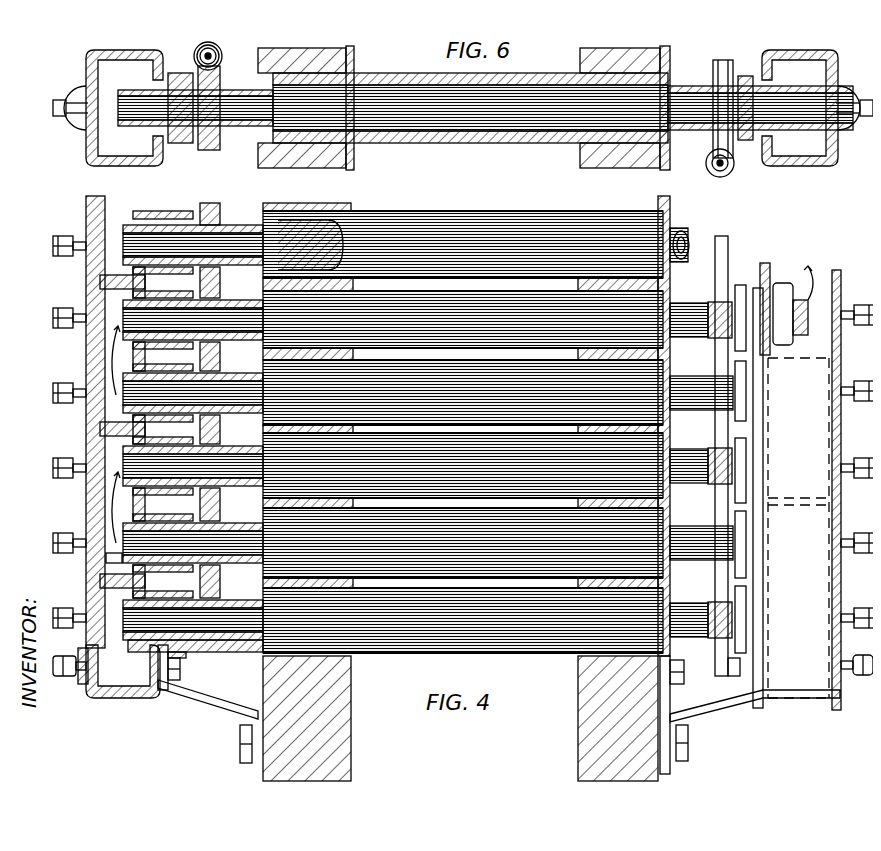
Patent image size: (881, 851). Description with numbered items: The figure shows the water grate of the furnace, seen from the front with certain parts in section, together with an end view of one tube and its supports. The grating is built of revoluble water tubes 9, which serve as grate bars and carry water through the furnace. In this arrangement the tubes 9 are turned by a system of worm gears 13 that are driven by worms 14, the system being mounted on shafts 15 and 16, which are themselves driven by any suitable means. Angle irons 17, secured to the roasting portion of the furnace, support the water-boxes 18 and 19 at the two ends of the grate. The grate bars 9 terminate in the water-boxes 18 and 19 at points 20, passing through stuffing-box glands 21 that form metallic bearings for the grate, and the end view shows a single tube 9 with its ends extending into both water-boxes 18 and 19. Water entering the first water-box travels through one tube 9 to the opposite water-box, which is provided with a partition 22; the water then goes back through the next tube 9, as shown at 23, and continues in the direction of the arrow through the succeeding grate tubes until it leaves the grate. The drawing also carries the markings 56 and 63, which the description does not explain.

In FIG. 6, the water tubes 9 is at (485, 108).
In FIG. 4, the water tubes 9 is at (428, 432).
In FIG. 6, the worm gears 13 is at (212, 75).
In FIG. 4, the worm gears 13 is at (212, 202).
In FIG. 6, the worms 14 is at (214, 52).
In FIG. 4, the worms 14 is at (706, 293).
In FIG. 6, the shaft 15 is at (213, 44).
In FIG. 4, the shaft 15 is at (851, 528).
In FIG. 6, the shaft 16 is at (706, 168).
In FIG. 4, the shaft 16 is at (720, 250).
In FIG. 4, the angle irons 17 is at (208, 700).
In FIG. 6, the water-box 18 is at (134, 158).
In FIG. 4, the water-box 18 is at (116, 686).
In FIG. 6, the water-box 19 is at (800, 158).
In FIG. 4, the water-box 19 is at (799, 528).
In FIG. 4, the points 20 is at (180, 272).
In FIG. 4, the stuffing-box glands 21 is at (132, 648).
In FIG. 4, the partition 22 is at (100, 575).
In FIG. 4, the return water path 23 is at (112, 548).
In FIG. 4, the nut 56 is at (212, 497).
In FIG. 4, the hook 63 is at (180, 645).